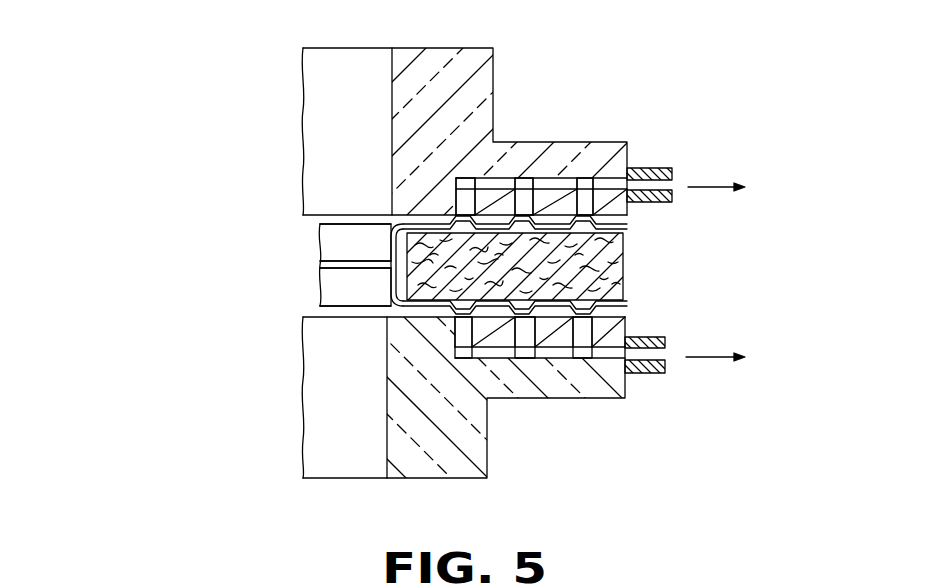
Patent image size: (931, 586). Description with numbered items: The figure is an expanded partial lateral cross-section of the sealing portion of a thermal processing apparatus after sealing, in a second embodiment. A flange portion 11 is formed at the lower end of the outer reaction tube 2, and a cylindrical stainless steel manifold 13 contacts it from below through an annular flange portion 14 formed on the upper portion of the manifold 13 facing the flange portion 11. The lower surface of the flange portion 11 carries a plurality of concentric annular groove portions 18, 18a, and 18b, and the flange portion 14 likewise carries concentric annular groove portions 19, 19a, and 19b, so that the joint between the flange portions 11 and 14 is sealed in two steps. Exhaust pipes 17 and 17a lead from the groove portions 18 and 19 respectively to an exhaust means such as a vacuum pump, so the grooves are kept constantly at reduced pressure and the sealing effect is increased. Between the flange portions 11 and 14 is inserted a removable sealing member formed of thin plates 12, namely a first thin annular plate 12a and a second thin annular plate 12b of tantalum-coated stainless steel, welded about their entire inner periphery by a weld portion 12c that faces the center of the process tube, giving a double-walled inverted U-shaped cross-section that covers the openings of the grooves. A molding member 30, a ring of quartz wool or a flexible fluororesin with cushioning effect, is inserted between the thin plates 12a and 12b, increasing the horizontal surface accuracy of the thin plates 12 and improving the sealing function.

The outer reaction tube 2 is at (497, 70).
The flange portion 11 is at (620, 185).
The thin plates 12 is at (283, 262).
The first thin annular plate 12a is at (330, 240).
The second thin annular plate 12b is at (318, 296).
The weld portion 12c is at (337, 263).
The manifold 13 is at (490, 462).
The flange portion 14 is at (627, 397).
The exhaust pipe 17 is at (662, 168).
The exhaust pipe 17a is at (660, 373).
The annular groove portion 18 is at (463, 187).
The annular groove portion 18a is at (522, 197).
The annular groove portion 18b is at (582, 197).
The annular groove portion 19 is at (465, 345).
The annular groove portion 19a is at (523, 338).
The annular groove portion 19b is at (582, 340).
The molding member 30 is at (627, 268).